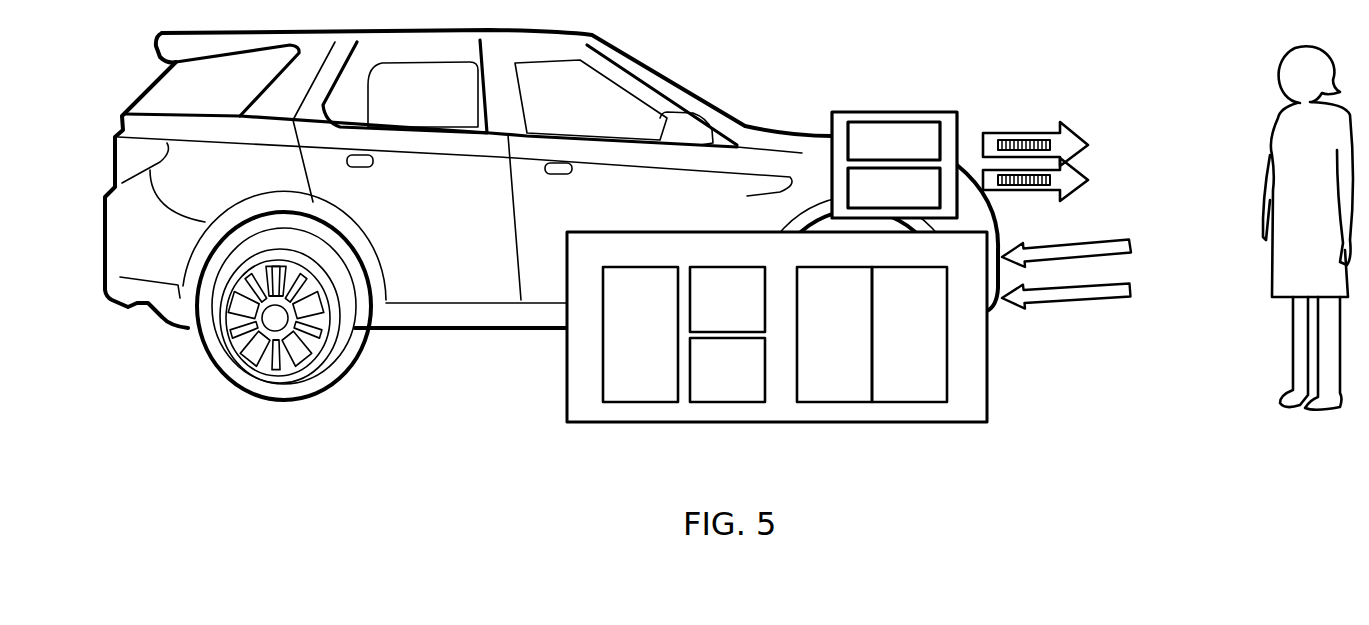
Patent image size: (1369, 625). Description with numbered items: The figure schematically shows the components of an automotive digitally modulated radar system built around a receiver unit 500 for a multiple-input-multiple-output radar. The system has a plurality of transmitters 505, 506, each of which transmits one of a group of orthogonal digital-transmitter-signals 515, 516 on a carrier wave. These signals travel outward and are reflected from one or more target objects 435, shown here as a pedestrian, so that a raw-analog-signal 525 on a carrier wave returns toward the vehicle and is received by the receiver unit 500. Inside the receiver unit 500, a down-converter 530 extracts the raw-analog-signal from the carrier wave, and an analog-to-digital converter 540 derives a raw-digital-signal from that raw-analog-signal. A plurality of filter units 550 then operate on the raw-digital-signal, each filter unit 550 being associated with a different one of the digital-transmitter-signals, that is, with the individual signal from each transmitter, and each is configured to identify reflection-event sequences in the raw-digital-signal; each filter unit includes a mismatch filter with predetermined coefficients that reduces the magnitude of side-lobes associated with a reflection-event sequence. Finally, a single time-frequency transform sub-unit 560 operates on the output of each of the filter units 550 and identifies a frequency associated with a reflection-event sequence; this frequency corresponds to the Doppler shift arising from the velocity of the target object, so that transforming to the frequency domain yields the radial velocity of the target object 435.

The target object 435 is at (1272, 120).
The receiver unit 500 is at (933, 422).
The transmitter 505 is at (870, 157).
The transmitter 506 is at (870, 204).
The digital-transmitter-signal 515 is at (1023, 192).
The digital-transmitter-signal 516 is at (1012, 133).
The raw-analog-signal 525 is at (1120, 254).
The down-converter 530 is at (886, 349).
The analog-to-digital converter 540 is at (811, 349).
The filter unit 550 is at (704, 312).
The time-frequency transform sub-unit 560 is at (617, 349).